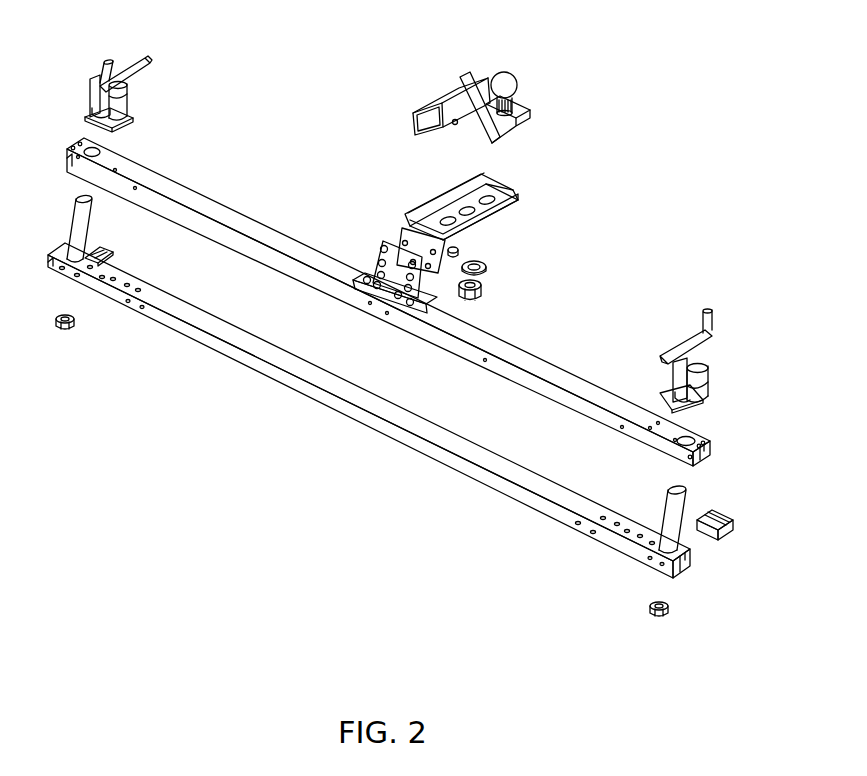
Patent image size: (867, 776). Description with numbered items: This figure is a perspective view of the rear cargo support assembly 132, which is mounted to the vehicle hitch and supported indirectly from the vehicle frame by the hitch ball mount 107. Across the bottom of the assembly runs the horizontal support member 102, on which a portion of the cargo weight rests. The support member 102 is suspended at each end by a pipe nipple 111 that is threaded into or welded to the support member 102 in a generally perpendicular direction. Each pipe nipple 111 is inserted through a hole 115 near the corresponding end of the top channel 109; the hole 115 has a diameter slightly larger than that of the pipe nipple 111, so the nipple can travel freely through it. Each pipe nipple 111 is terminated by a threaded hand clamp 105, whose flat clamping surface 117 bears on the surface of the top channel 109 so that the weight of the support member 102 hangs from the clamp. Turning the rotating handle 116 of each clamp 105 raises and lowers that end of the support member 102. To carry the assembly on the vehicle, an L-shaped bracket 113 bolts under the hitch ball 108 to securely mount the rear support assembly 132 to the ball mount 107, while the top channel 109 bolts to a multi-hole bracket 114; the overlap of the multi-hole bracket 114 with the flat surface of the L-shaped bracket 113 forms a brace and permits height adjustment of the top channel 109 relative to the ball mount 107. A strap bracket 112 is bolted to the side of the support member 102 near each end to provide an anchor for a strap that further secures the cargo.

The horizontal support member 102 is at (250, 370).
The threaded hand clamp 105 is at (411, 216).
The hitch ball mount 107 is at (505, 83).
The hitch ball 108 is at (514, 75).
The top channel 109 is at (305, 286).
The pipe nipple 111 is at (80, 222).
The strap bracket 112 is at (100, 252).
The L-shaped bracket 113 is at (518, 202).
The multi-hole bracket 114 is at (384, 242).
The hole 115 is at (93, 147).
The rotating handle 116 is at (106, 58).
The flat clamping surface 117 is at (113, 133).
The rear cargo support assembly 132 is at (330, 533).